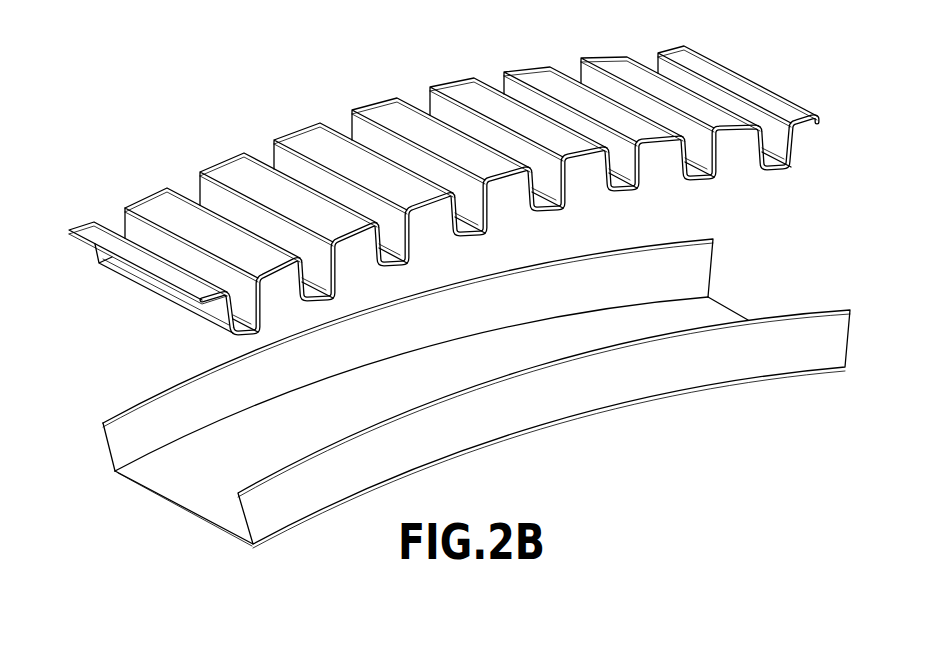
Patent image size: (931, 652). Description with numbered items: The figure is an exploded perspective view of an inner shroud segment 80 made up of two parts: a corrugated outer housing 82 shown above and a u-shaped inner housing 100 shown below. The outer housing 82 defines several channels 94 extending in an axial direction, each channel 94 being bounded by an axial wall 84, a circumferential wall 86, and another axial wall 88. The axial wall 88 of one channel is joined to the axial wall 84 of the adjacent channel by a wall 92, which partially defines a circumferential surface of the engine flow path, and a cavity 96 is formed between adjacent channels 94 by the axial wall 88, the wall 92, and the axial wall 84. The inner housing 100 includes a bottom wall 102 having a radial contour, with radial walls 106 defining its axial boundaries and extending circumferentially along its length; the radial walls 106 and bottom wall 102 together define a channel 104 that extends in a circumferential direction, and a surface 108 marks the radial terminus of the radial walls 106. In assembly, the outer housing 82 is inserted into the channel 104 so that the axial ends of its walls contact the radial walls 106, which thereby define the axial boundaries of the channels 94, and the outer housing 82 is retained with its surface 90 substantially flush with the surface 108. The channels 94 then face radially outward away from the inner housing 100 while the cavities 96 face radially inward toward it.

The inner shroud segment 80 is at (96, 60).
The outer housing 82 is at (78, 240).
The axial wall 84 is at (232, 308).
The circumferential wall 86 is at (246, 325).
The axial wall 88 is at (128, 227).
The surface 90 is at (160, 200).
The wall 92 is at (447, 87).
The channels 94 is at (473, 208).
The cavity 96 is at (613, 198).
The inner housing 100 is at (457, 393).
The bottom wall 102 is at (714, 298).
The channel 104 is at (212, 458).
The radial walls 106 is at (133, 423).
The surface 108 is at (582, 355).